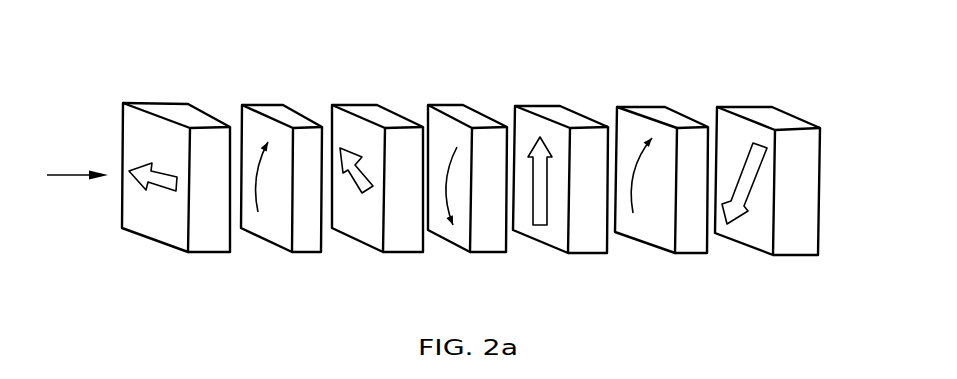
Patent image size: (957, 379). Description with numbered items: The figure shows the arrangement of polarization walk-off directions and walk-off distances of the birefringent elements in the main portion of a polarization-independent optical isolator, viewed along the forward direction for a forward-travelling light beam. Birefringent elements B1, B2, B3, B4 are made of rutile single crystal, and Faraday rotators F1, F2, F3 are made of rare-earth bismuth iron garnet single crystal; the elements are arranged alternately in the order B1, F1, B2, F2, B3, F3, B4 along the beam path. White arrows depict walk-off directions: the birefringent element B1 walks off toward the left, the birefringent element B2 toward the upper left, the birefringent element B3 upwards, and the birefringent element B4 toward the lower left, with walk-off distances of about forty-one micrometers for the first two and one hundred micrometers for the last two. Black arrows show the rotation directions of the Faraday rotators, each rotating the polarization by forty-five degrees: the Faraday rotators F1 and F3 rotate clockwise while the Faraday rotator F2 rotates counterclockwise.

The birefringent element B1 is at (165, 103).
The Faraday rotator F1 is at (262, 103).
The birefringent element B2 is at (362, 103).
The Faraday rotator F2 is at (448, 103).
The birefringent element B3 is at (545, 106).
The Faraday rotator F3 is at (640, 107).
The birefringent element B4 is at (742, 107).